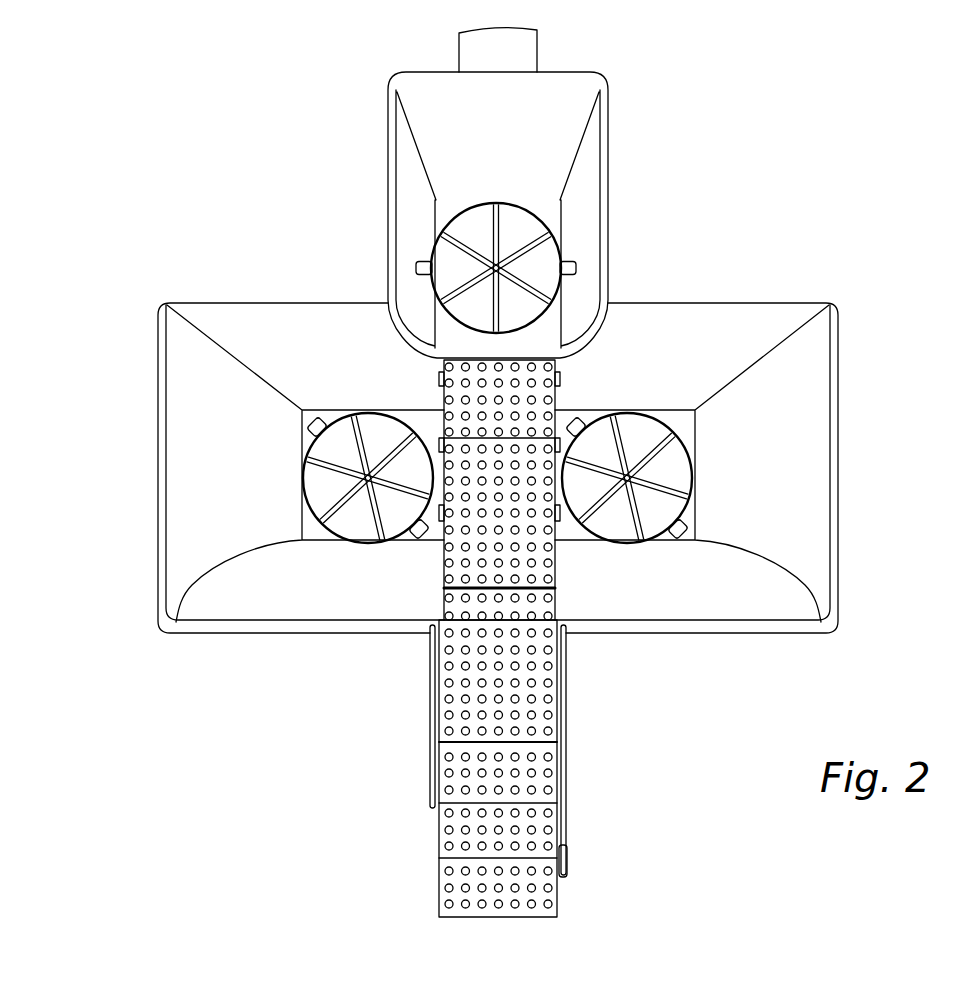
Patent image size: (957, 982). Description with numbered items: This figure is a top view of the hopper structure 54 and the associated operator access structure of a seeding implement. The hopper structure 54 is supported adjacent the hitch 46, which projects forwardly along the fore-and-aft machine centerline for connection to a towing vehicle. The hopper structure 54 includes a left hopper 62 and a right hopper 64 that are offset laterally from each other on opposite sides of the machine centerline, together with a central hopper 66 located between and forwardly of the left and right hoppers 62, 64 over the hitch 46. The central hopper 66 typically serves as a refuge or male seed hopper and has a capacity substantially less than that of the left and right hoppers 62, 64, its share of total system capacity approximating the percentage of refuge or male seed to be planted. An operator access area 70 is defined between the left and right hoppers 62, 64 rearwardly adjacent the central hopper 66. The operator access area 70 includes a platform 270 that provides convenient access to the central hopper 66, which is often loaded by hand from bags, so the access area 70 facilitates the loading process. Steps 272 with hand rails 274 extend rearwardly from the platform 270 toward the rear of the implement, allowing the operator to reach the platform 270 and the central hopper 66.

The hitch 46 is at (566, 45).
The hopper structure 54 is at (318, 262).
The central hopper 66 is at (606, 160).
The left hopper 62 is at (178, 430).
The right hopper 64 is at (830, 437).
The platform 270 is at (517, 430).
The operator access area 70 is at (491, 505).
The steps 272 is at (458, 690).
The hand rails 274 is at (566, 774).